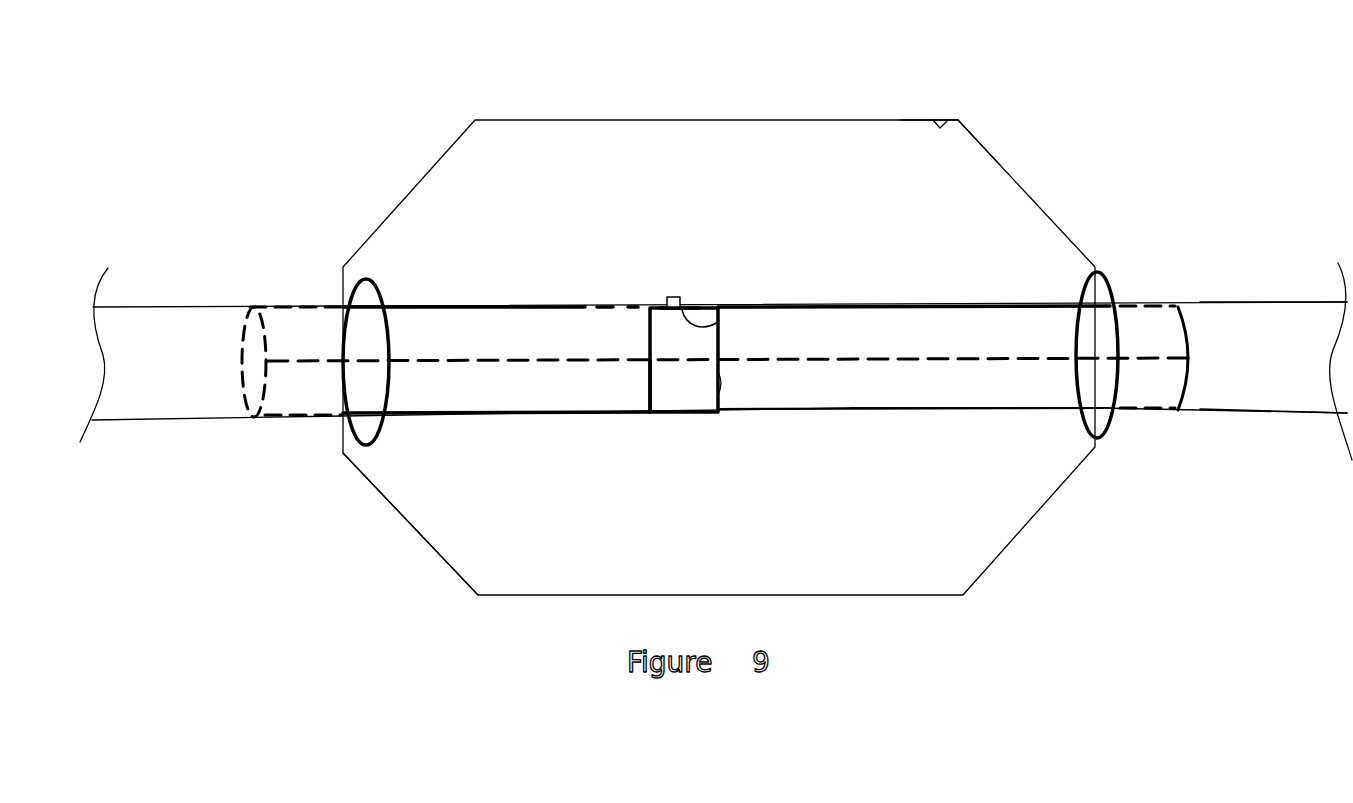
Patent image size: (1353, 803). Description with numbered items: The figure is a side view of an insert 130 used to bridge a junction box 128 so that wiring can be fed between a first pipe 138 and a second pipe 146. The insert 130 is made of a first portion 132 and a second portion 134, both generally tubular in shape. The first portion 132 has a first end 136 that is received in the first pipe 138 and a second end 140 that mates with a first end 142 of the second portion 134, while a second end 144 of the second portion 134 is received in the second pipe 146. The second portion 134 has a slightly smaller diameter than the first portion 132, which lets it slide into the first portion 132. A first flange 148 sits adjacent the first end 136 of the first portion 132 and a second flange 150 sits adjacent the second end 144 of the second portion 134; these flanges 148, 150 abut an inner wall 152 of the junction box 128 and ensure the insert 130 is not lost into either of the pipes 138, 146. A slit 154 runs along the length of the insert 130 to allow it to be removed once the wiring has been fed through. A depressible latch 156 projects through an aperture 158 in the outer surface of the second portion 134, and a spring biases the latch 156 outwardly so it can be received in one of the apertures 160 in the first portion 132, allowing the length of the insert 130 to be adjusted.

The junction box 128 is at (647, 143).
The insert 130 is at (977, 302).
The first portion 132 is at (435, 395).
The second portion 134 is at (932, 393).
The first end of first portion 136 is at (297, 402).
The first pipe 138 is at (162, 407).
The second end of first portion 140 is at (695, 412).
The first end of second portion 142 is at (652, 368).
The second end of second portion 144 is at (1162, 325).
The second pipe 146 is at (1275, 398).
The first flange 148 is at (365, 277).
The second flange 150 is at (1105, 280).
The inner wall 152 is at (953, 118).
The slit 154 is at (542, 318).
The depressible latch 156 is at (677, 297).
The aperture 158 is at (718, 322).
The apertures 160 is at (620, 302).